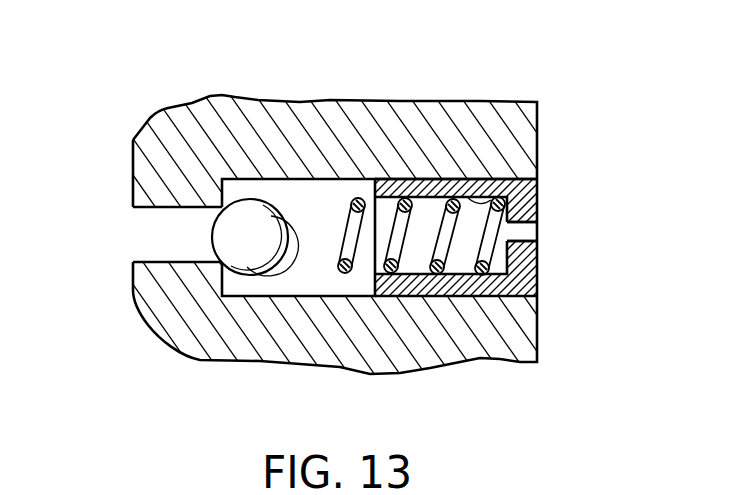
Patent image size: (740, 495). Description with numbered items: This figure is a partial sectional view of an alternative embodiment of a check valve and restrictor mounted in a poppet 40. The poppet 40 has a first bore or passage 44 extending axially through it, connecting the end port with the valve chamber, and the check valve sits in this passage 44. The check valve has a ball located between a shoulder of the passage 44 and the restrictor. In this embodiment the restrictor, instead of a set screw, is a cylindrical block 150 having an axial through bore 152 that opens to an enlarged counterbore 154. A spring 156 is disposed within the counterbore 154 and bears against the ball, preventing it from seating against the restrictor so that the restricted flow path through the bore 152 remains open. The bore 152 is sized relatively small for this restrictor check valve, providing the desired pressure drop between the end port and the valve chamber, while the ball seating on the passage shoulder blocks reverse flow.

The poppet 40 is at (360, 123).
The first bore or passage 44 is at (170, 242).
The cylindrical block 150 is at (525, 193).
The axial through bore 152 is at (525, 232).
The enlarged counterbore 154 is at (513, 173).
The spring 156 is at (343, 275).